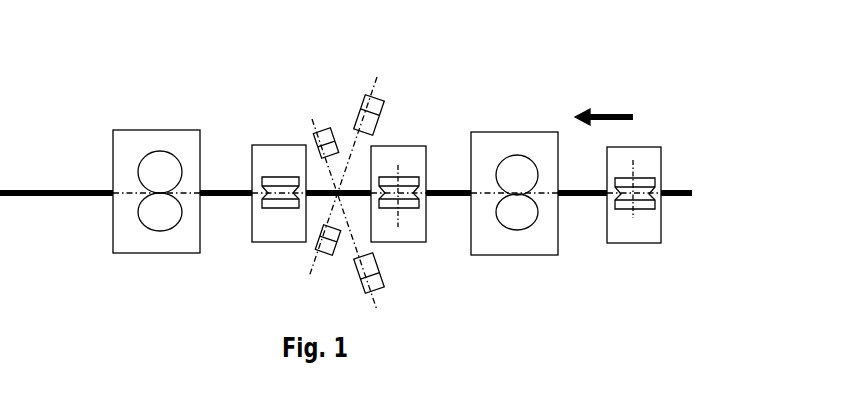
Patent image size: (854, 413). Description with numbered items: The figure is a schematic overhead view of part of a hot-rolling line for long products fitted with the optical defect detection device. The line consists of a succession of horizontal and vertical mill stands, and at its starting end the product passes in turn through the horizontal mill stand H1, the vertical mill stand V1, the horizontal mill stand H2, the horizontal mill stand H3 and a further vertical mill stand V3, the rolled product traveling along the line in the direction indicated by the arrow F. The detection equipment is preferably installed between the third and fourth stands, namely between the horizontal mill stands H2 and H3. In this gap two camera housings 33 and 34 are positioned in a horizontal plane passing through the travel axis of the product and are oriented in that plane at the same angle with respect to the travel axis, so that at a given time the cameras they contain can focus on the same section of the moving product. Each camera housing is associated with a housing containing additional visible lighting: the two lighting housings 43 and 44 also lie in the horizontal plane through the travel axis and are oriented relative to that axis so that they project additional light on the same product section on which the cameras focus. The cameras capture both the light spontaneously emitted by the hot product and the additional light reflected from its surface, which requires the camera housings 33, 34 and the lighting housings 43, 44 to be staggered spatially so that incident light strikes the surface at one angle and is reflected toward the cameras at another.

The vertical mill stand V3 is at (178, 245).
The horizontal mill stand H3 is at (262, 163).
The horizontal mill stand H2 is at (418, 160).
The vertical mill stand V1 is at (538, 243).
The horizontal mill stand H1 is at (650, 232).
The camera housing 33 is at (378, 114).
The camera housing 34 is at (378, 268).
The lighting housing 43 is at (331, 132).
The lighting housing 44 is at (316, 247).
The direction of product travel F is at (604, 101).